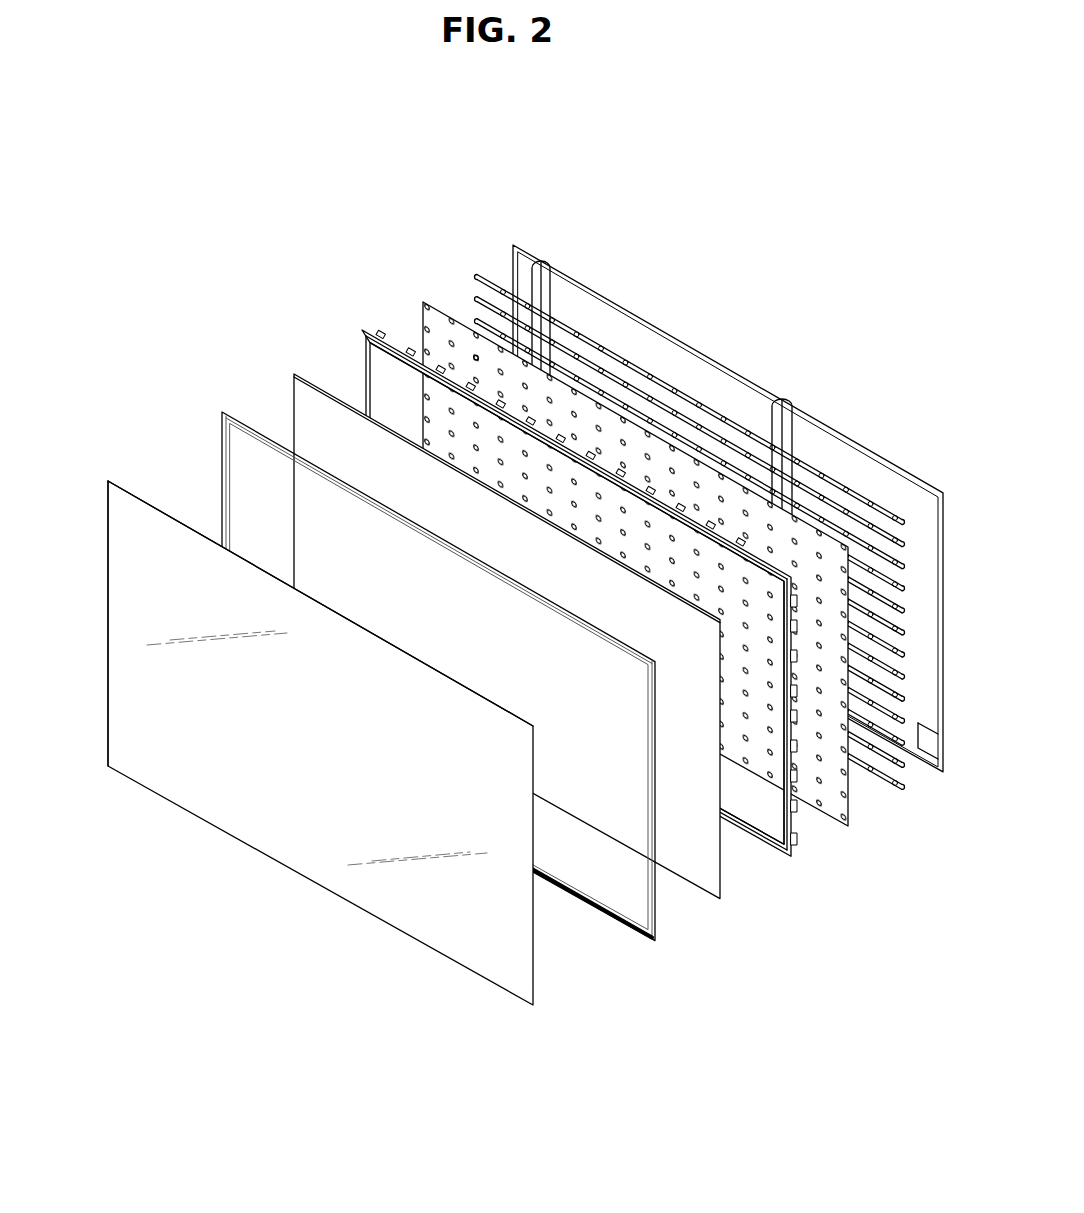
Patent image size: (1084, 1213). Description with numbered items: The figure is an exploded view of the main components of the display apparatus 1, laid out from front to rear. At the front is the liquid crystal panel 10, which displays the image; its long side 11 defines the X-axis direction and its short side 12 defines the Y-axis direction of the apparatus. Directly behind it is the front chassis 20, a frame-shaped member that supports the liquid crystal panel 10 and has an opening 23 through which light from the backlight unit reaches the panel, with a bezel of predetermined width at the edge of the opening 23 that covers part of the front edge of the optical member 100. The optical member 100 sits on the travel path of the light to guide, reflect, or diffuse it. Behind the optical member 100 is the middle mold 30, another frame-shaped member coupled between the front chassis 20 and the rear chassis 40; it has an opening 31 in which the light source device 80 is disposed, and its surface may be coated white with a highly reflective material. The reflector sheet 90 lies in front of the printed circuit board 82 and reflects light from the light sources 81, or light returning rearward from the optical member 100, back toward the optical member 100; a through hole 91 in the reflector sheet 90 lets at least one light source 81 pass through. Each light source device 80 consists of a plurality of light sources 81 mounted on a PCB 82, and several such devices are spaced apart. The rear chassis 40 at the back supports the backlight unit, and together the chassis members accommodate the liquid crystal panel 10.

The display apparatus 1 is at (275, 199).
The liquid crystal panel 10 is at (291, 731).
The long side 11 is at (177, 520).
The short side 12 is at (108, 581).
The front chassis 20 is at (417, 679).
The opening 23 is at (616, 908).
The middle mold 30 is at (570, 585).
The opening 31 is at (780, 849).
The rear chassis 40 is at (626, 307).
The light source device 80 is at (672, 461).
The light sources 81 is at (675, 494).
The printed circuit board 82 is at (495, 279).
The reflector sheet 90 is at (626, 529).
The through hole 91 is at (474, 355).
The optical member 100 is at (299, 388).